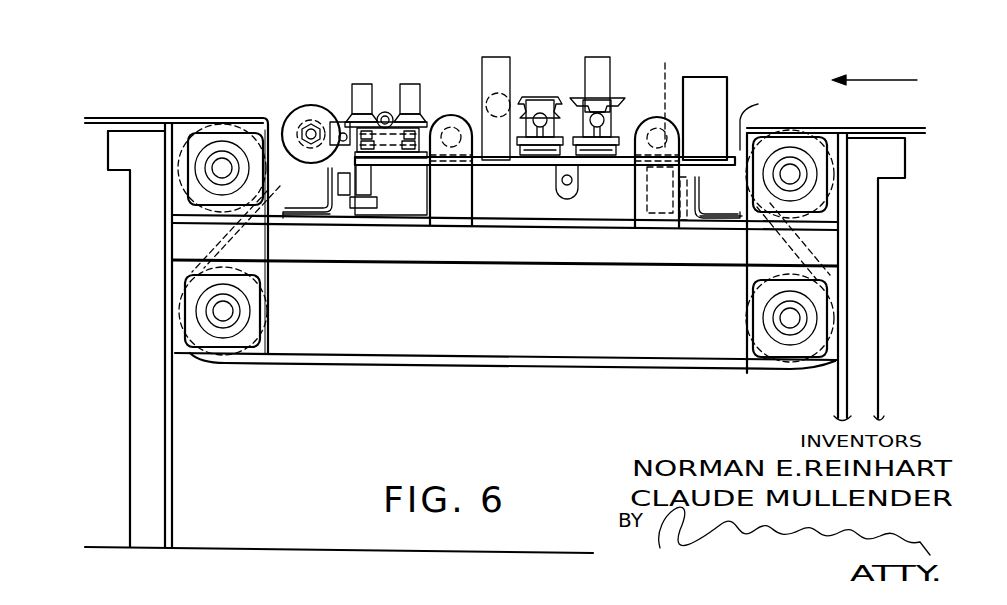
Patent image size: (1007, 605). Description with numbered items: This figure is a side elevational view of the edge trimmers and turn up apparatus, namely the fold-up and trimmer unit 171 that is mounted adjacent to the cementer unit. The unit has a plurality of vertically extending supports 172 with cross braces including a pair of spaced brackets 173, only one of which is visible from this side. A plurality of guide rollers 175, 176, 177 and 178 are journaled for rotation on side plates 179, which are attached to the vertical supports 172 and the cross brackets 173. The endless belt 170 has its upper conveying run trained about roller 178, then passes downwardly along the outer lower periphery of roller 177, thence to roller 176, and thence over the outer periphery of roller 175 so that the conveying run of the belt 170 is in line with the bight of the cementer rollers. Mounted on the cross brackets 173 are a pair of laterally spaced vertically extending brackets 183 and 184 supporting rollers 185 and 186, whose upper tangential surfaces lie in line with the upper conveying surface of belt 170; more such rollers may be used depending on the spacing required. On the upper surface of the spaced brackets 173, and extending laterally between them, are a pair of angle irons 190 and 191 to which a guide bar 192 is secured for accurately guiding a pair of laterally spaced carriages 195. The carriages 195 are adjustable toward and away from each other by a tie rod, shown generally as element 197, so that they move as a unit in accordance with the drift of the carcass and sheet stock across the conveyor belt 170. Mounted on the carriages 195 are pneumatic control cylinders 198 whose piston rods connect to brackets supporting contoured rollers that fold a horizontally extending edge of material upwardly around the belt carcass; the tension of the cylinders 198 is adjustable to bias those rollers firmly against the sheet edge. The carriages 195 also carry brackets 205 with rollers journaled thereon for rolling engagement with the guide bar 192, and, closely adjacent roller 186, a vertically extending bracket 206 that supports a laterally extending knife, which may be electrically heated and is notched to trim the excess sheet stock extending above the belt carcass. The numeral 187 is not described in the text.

The endless belt 170 is at (147, 118).
The fold-up and trimmer unit 171 is at (226, 42).
The vertically extending supports 172 is at (155, 527).
The cross brackets 173 is at (505, 253).
The guide roller 175 is at (185, 181).
The guide roller 176 is at (268, 352).
The guide roller 177 is at (752, 333).
The guide roller 178 is at (833, 191).
The side plates 179 is at (183, 271).
The vertically extending bracket 183 is at (464, 244).
The vertically extending bracket 184 is at (653, 180).
The roller 185 is at (455, 128).
The roller 186 is at (676, 57).
The pedestal support 187 is at (619, 77).
The angle iron 190 is at (283, 217).
The angle iron 191 is at (732, 220).
The guide bar 192 is at (285, 217).
The carriages 195 is at (728, 160).
The tie rod 197 is at (559, 184).
The pneumatic control cylinders 198 is at (484, 64).
The brackets 205 is at (366, 182).
The vertically extending bracket 206 is at (730, 93).